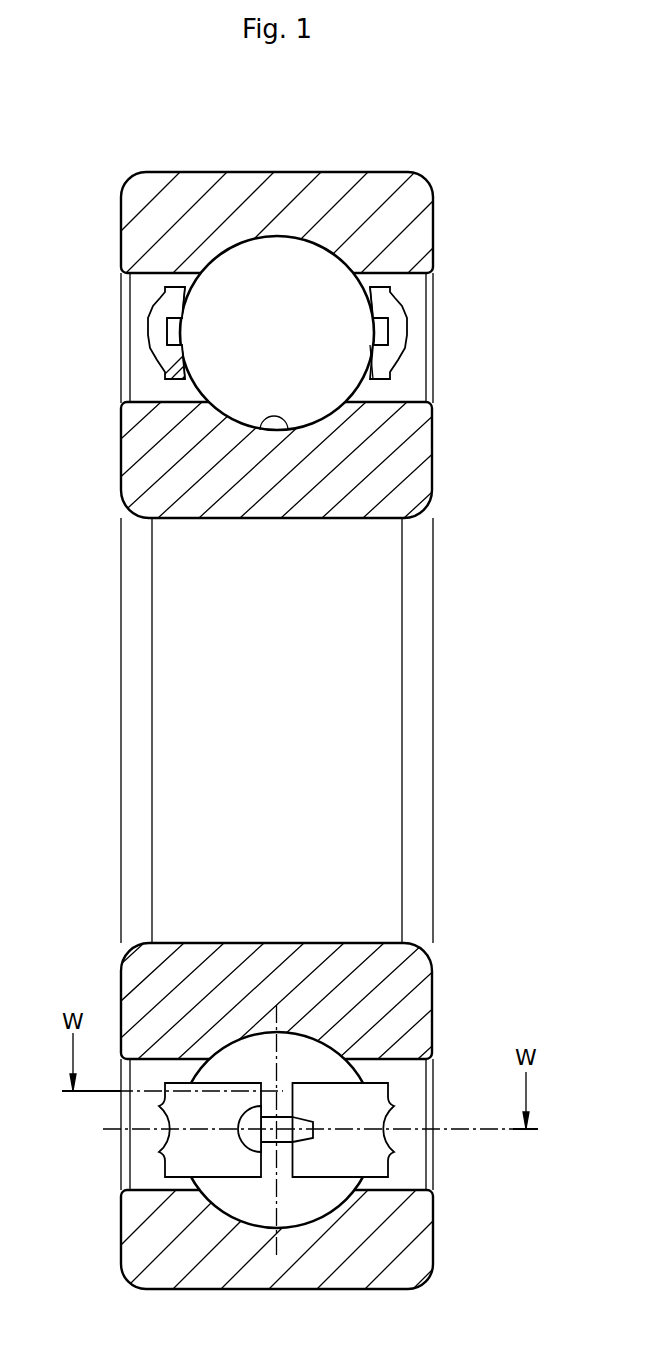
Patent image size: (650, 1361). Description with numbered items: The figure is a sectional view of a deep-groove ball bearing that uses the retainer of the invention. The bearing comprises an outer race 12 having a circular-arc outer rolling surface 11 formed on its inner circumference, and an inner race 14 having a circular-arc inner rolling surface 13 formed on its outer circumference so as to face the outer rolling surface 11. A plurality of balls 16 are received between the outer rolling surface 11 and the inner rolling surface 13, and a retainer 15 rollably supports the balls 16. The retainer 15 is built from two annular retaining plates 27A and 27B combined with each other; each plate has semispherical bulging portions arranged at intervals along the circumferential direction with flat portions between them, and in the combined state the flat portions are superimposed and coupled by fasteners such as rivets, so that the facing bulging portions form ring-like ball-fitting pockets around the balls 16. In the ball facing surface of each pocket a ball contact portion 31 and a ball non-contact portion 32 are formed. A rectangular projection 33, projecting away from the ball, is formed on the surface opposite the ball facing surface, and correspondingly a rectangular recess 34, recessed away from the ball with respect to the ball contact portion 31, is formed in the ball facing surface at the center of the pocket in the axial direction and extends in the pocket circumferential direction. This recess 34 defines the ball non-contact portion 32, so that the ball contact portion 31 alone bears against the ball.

The outer rolling surface 11 is at (271, 233).
The outer race 12 is at (436, 169).
The inner rolling surface 13 is at (290, 436).
The inner race 14 is at (445, 432).
The retainer 15 is at (300, 424).
The balls 16 is at (316, 272).
The ball contact portion 31 is at (183, 305).
The ball non-contact portion 32 is at (184, 346).
The rectangular projection 33 is at (155, 335).
The rectangular recess 34 is at (170, 325).
The annular retaining plate 27A is at (158, 1145).
The annular retaining plate 27B is at (398, 1112).